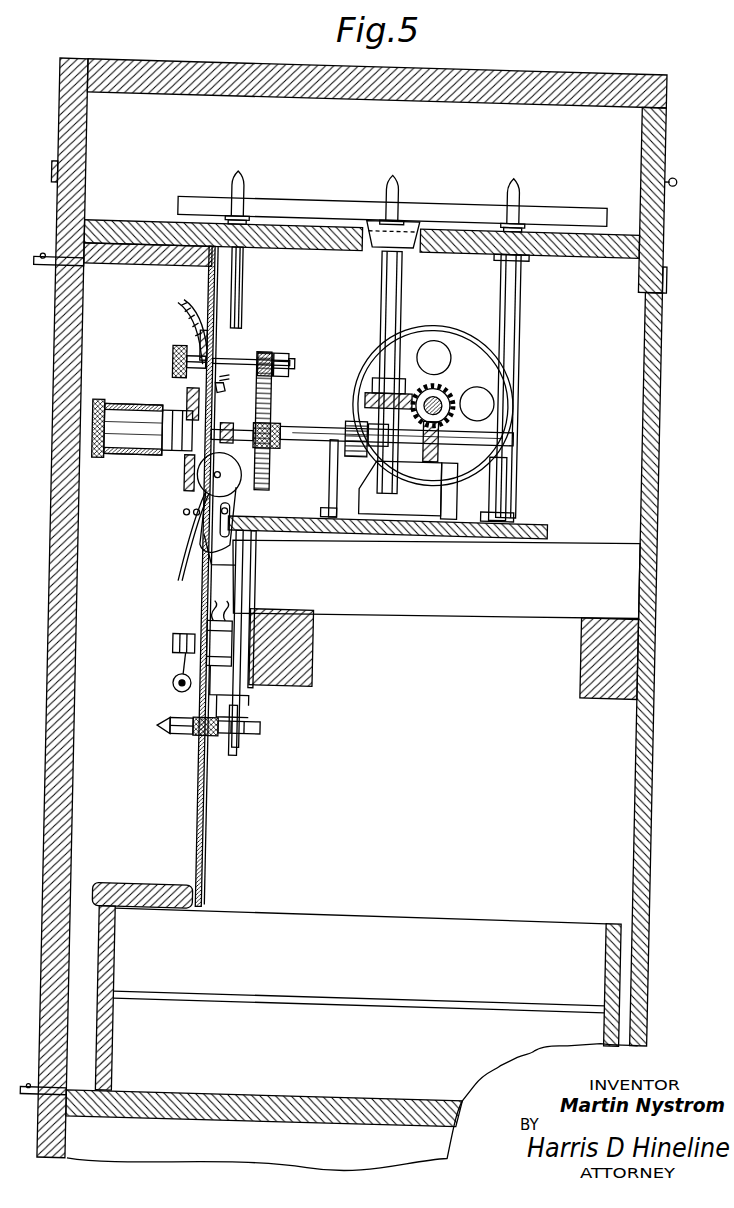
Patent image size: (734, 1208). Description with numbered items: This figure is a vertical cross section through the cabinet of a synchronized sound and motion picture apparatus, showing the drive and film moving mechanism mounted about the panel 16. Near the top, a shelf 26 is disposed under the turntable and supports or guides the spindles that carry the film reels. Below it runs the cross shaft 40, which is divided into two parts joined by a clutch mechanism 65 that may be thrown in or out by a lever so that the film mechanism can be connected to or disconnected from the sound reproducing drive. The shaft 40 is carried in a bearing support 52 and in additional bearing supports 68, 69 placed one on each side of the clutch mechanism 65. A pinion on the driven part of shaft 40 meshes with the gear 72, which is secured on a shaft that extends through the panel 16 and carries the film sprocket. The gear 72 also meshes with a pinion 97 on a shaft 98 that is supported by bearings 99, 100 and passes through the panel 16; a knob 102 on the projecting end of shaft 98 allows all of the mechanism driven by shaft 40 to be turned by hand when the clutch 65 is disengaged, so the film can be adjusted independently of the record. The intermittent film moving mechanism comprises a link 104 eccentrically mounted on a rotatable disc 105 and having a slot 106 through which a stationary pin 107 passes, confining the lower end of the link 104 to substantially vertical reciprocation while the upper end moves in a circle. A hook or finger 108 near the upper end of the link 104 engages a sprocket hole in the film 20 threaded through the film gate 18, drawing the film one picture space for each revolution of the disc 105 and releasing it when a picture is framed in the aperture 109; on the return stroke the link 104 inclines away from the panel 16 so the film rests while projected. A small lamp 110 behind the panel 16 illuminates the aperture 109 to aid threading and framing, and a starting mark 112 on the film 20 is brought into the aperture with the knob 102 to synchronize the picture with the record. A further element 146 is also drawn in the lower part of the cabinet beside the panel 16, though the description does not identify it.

The panel 16 is at (219, 266).
The film gate 18 is at (194, 482).
The film 20 is at (192, 553).
The shelf 26 is at (599, 243).
The cross shaft 40 is at (308, 425).
The bearing support 52 is at (519, 475).
The clutch mechanism 65 is at (363, 448).
The bearing support 68 is at (342, 488).
The bearing support 69 is at (449, 497).
The gear 72 is at (277, 386).
The pinion 97 is at (268, 347).
The shaft 98 is at (298, 357).
The bearing 99 is at (236, 353).
The bearing 100 is at (286, 347).
The knob 102 is at (179, 347).
The link 104 is at (235, 543).
The rotatable disc 105 is at (249, 494).
The slot 106 is at (240, 530).
The stationary pin 107 is at (242, 521).
The finger 108 is at (194, 467).
The aperture 109 is at (199, 394).
The lamp 110 is at (232, 386).
The starting mark 112 is at (182, 302).
The cartridge 146 is at (184, 725).